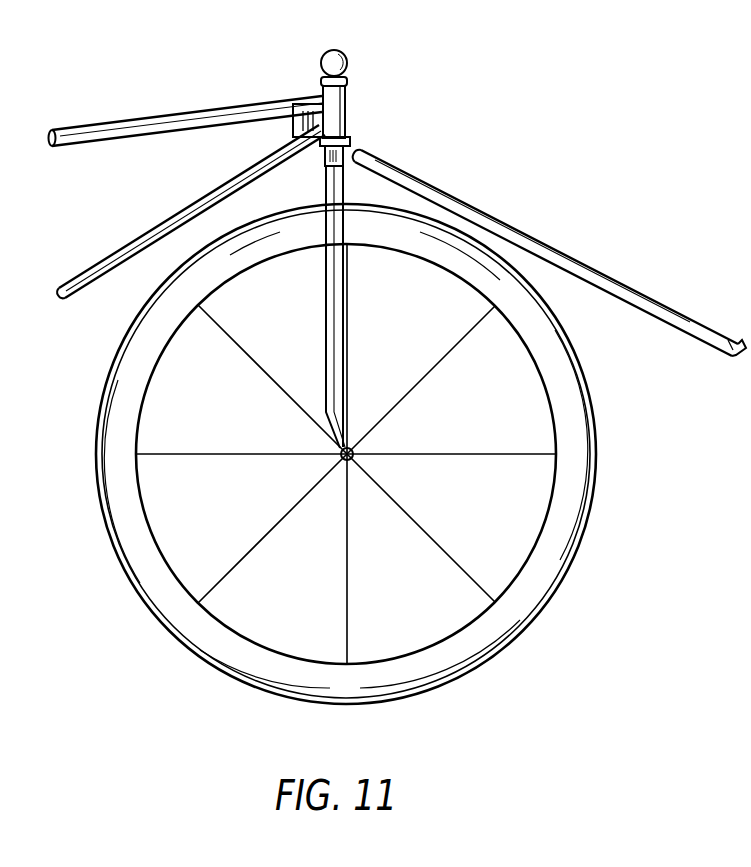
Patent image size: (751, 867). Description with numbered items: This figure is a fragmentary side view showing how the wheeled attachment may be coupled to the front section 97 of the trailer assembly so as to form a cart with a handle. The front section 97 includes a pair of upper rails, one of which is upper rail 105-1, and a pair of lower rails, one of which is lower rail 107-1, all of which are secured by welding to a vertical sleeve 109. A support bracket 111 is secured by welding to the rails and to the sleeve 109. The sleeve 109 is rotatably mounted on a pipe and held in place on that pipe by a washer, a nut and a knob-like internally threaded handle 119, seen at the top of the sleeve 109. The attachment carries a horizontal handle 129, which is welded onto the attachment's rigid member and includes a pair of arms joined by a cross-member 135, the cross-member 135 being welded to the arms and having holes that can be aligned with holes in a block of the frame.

The front section 97 is at (252, 100).
The upper rail 105-1 is at (132, 122).
The lower rail 107-1 is at (147, 236).
The vertical sleeve 109 is at (348, 112).
The support bracket 111 is at (292, 122).
The knob-like internally threaded handle 119 is at (346, 55).
The horizontal handle 129 is at (497, 219).
The cross-member 135 is at (724, 354).